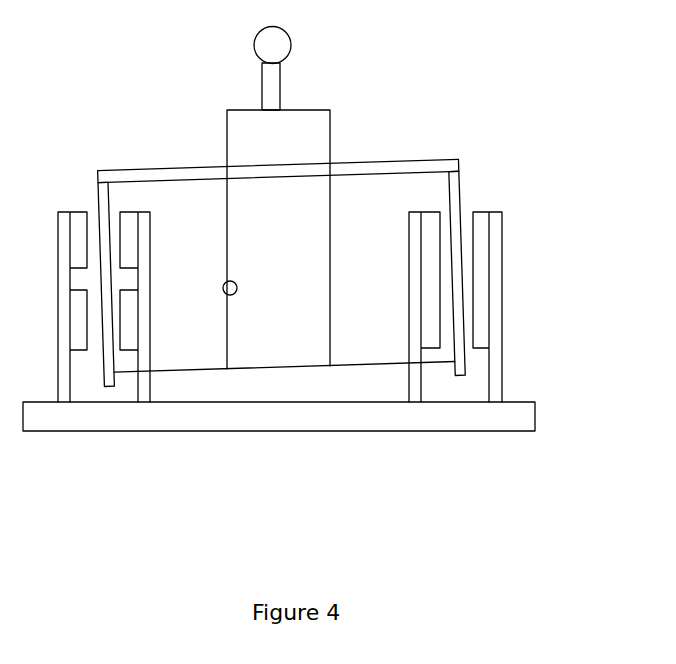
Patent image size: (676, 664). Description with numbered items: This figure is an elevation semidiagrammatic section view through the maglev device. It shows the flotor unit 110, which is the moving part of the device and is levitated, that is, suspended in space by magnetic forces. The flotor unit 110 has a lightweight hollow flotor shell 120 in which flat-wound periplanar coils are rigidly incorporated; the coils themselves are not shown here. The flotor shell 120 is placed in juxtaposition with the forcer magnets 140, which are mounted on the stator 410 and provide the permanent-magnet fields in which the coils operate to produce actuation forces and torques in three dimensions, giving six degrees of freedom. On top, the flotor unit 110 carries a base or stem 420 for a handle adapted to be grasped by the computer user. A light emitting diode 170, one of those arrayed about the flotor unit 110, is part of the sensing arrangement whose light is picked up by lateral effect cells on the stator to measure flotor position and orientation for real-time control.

The flotor unit 110 is at (143, 169).
The flotor shell 120 is at (460, 173).
The forcer magnets 140 is at (80, 211).
The light emitting diodes 170 is at (232, 282).
The stator 410 is at (536, 410).
The stem 420 is at (261, 89).